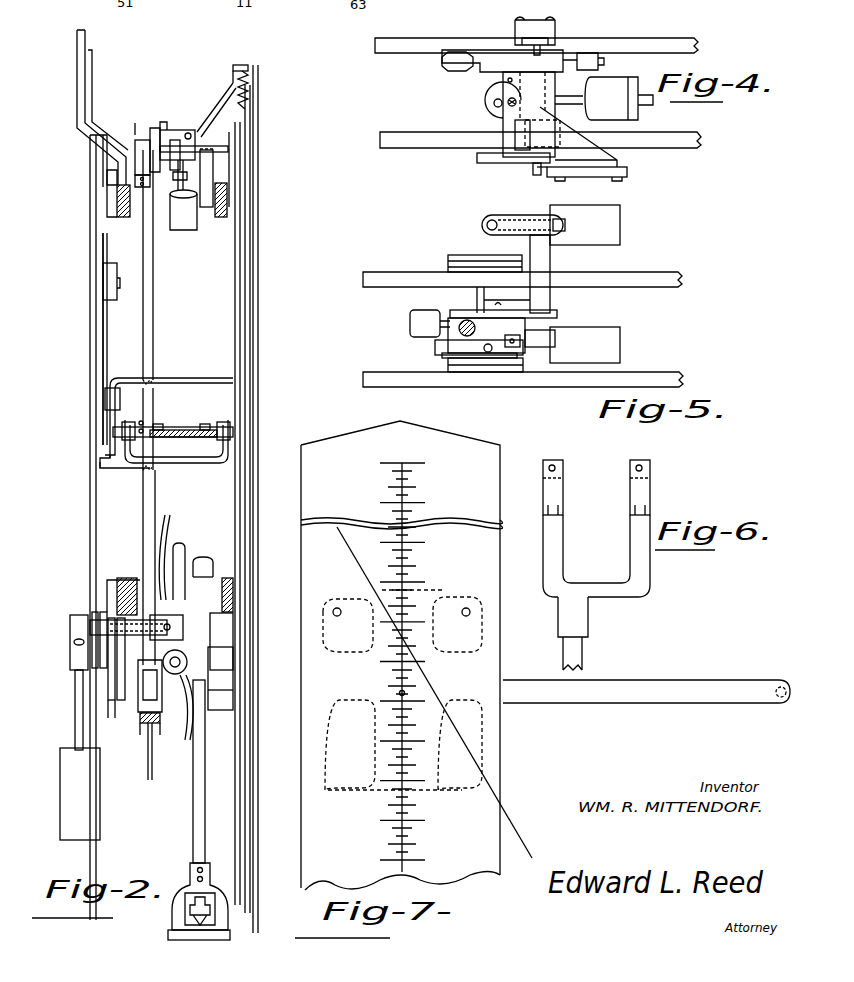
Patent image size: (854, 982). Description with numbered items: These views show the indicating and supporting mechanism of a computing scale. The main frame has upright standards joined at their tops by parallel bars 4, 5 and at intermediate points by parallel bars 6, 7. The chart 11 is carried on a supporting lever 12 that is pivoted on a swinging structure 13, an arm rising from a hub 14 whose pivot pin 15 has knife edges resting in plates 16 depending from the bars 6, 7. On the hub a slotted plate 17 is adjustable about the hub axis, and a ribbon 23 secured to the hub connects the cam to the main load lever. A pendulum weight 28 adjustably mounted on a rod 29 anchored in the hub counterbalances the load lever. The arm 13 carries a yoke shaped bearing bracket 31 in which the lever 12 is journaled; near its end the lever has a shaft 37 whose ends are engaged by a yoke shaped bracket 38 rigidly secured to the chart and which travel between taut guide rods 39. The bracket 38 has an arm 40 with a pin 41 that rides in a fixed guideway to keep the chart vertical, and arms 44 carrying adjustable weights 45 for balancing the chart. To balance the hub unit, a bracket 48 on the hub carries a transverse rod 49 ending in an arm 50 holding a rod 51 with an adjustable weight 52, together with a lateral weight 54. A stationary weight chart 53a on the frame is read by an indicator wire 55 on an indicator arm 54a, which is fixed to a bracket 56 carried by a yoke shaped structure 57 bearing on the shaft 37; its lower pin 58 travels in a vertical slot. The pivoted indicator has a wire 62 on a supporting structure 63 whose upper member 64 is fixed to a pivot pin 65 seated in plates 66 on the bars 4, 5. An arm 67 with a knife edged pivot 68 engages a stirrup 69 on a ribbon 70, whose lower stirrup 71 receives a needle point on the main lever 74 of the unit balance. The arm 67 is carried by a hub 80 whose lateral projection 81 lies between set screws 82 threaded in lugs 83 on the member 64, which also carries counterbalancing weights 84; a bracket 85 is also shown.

In FIG. 2, the parallel bar 4 is at (228, 198).
In FIG. 4, the parallel bar 4 is at (413, 146).
In FIG. 2, the parallel bar 5 is at (117, 196).
In FIG. 4, the parallel bar 5 is at (414, 40).
In FIG. 2, the parallel bar 6 is at (235, 586).
In FIG. 5, the parallel bar 6 is at (396, 387).
In FIG. 2, the parallel bar 7 is at (117, 585).
In FIG. 5, the parallel bar 7 is at (386, 287).
In FIG. 2, the chart 11 is at (240, 297).
In FIG. 4, the chart 11 is at (487, 163).
In FIG. 7, the chart 11 is at (500, 545).
In FIG. 2, the supporting lever 12 is at (192, 428).
In FIG. 2, the swinging structure 13 is at (187, 553).
In FIG. 5, the swinging structure 13 is at (466, 321).
In FIG. 6, the swinging structure 13 is at (580, 650).
In FIG. 2, the hub 14 is at (183, 628).
In FIG. 5, the hub 14 is at (505, 347).
In FIG. 2, the pivot pin 15 is at (100, 632).
In FIG. 5, the pivot pin 15 is at (492, 300).
In FIG. 2, the plate 16 is at (228, 650).
In FIG. 5, the plate 16 is at (455, 258).
In FIG. 2, the plate 17 is at (210, 698).
In FIG. 5, the plate 17 is at (443, 358).
In FIG. 2, the ribbon 23 is at (205, 793).
In FIG. 5, the ribbon 23 is at (440, 348).
In FIG. 2, the weight 28 is at (235, 681).
In FIG. 5, the weight 28 is at (620, 338).
In FIG. 5, the rod 29 is at (556, 343).
In FIG. 6, the yoke shaped bearing bracket 31 is at (558, 553).
In FIG. 2, the shaft 37 is at (172, 428).
In FIG. 2, the yoke shaped bracket 38 is at (203, 378).
In FIG. 2, the guide rod 39 is at (141, 421).
In FIG. 7, the arm 40 is at (660, 680).
In FIG. 7, the pin 41 is at (784, 687).
In FIG. 2, the arm 44 is at (125, 348).
In FIG. 2, the weight 45 is at (114, 268).
In FIG. 2, the bracket 48 is at (162, 570).
In FIG. 5, the bracket 48 is at (560, 314).
In FIG. 2, the rod 49 is at (140, 580).
In FIG. 5, the rod 49 is at (553, 262).
In FIG. 2, the arm 50 is at (70, 655).
In FIG. 5, the arm 50 is at (492, 215).
In FIG. 2, the rod 51 is at (75, 718).
In FIG. 4, the rod 51 is at (556, 185).
In FIG. 5, the rod 51 is at (560, 218).
In FIG. 2, the weight 52 is at (100, 783).
In FIG. 5, the weight 52 is at (618, 220).
In FIG. 2, the stationary weight chart 53a is at (78, 97).
In FIG. 2, the weight 54 is at (183, 712).
In FIG. 5, the weight 54 is at (410, 326).
In FIG. 2, the indicator arm 54a is at (90, 240).
In FIG. 2, the indicator wire 55 is at (93, 89).
In FIG. 2, the bracket 56 is at (108, 464).
In FIG. 2, the yoke shaped structure 57 is at (208, 462).
In FIG. 2, the pin 58 is at (110, 702).
In FIG. 2, the indicator wire 62 is at (257, 331).
In FIG. 7, the indicator wire 62 is at (528, 838).
In FIG. 2, the supporting structure 63 is at (250, 263).
In FIG. 4, the supporting structure 63 is at (628, 175).
In FIG. 2, the member 64 is at (248, 66).
In FIG. 4, the member 64 is at (534, 168).
In FIG. 2, the pivot pin 65 is at (230, 148).
In FIG. 2, the plate 66 is at (117, 207).
In FIG. 2, the arm 67 is at (136, 134).
In FIG. 4, the arm 67 is at (483, 74).
In FIG. 2, the knife edged pivot 68 is at (138, 150).
In FIG. 4, the stirrup 69 is at (445, 65).
In FIG. 2, the ribbon 70 is at (151, 333).
In FIG. 2, the stirrup 71 is at (150, 778).
In FIG. 2, the main lever 74 is at (157, 740).
In FIG. 2, the hub 80 is at (151, 130).
In FIG. 4, the hub 80 is at (554, 63).
In FIG. 2, the lateral projection 81 is at (178, 205).
In FIG. 2, the set screw 82 is at (169, 130).
In FIG. 4, the set screw 82 is at (511, 106).
In FIG. 2, the lug 83 is at (174, 135).
In FIG. 4, the lug 83 is at (496, 103).
In FIG. 2, the counterbalancing weight 84 is at (190, 232).
In FIG. 4, the counterbalancing weight 84 is at (589, 61).
In FIG. 4, the bracket 85 is at (536, 38).